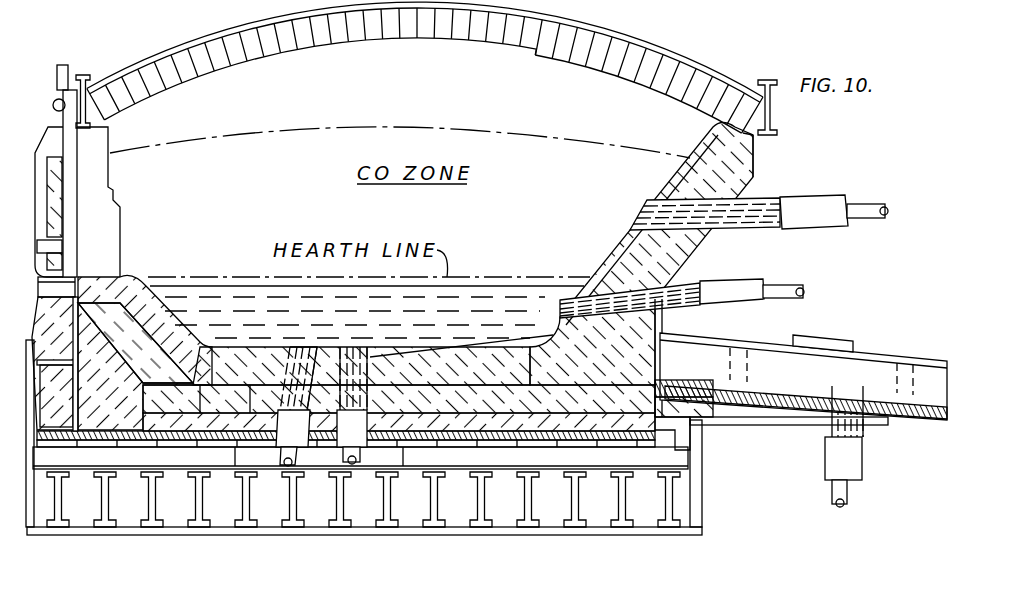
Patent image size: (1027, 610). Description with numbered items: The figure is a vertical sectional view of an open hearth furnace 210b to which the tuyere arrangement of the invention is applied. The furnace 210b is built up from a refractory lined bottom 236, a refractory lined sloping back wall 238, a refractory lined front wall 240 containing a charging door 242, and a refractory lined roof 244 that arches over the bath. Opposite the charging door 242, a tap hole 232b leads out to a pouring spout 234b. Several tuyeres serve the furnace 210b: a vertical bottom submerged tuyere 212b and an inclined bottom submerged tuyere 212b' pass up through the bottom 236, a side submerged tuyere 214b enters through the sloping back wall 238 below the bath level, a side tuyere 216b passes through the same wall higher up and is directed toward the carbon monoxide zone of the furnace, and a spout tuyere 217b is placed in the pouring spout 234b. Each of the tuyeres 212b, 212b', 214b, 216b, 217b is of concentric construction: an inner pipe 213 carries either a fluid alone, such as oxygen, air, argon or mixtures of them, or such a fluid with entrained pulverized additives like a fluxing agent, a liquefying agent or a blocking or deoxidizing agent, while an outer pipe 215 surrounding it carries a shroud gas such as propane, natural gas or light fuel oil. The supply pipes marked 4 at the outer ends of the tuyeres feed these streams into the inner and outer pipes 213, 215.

The open hearth furnace 210b is at (438, 67).
The refractory lined roof 244 is at (570, 52).
The refractory lined front wall 240 is at (93, 150).
The charging door 242 is at (43, 187).
The refractory lined sloping back wall 238 is at (733, 155).
The side tuyere 216b is at (814, 195).
The side submerged tuyere 214b is at (759, 311).
The inclined bottom submerged tuyere 212b' is at (278, 378).
The vertical bottom submerged tuyere 212b is at (382, 378).
The tap hole 232b is at (570, 355).
The pouring spout 234b is at (870, 358).
The spout tuyere 217b is at (866, 455).
The refractory lined bottom 236 is at (507, 423).
The inner pipe 213 is at (640, 215).
The outer pipe 215 is at (628, 228).
The gas supply pipe 4 is at (862, 207).